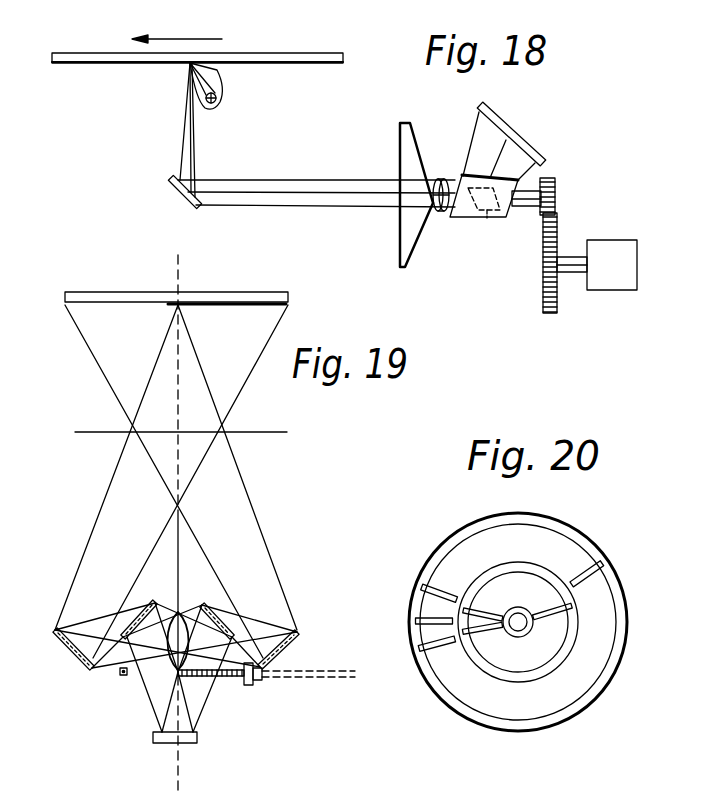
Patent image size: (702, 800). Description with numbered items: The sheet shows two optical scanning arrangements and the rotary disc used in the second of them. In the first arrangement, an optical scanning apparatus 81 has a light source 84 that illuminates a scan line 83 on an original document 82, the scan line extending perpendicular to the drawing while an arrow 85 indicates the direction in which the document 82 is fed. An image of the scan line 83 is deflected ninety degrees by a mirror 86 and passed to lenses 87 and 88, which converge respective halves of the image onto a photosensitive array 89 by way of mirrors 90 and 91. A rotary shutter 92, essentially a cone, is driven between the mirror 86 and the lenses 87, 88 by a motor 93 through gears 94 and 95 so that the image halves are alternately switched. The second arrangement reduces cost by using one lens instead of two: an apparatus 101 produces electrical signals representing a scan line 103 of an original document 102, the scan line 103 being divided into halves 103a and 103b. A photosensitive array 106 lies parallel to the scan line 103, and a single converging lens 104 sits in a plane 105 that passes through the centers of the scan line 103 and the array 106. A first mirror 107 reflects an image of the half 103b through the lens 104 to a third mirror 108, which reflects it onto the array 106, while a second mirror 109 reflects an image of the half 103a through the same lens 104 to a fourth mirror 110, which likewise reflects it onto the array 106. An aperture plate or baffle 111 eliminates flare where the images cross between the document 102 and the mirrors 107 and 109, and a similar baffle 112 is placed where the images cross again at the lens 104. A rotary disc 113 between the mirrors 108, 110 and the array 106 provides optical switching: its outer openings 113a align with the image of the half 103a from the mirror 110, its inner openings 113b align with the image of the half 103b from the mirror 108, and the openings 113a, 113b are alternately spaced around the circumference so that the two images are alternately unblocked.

In FIG. 18, the optical scanning apparatus 81 is at (252, 229).
In FIG. 18, the original document 82 is at (347, 60).
In FIG. 18, the scan line 83 is at (188, 66).
In FIG. 18, the light source 84 is at (222, 95).
In FIG. 18, the arrow 85 is at (177, 36).
In FIG. 18, the mirror 86 is at (170, 184).
In FIG. 18, the lens 87 is at (441, 178).
In FIG. 18, the lens 88 is at (441, 214).
In FIG. 18, the photosensitive array 89 is at (513, 122).
In FIG. 18, the mirror 90 is at (515, 218).
In FIG. 18, the mirror 91 is at (482, 219).
In FIG. 18, the rotary shutter 92 is at (399, 140).
In FIG. 18, the motor 93 is at (614, 291).
In FIG. 18, the gear 94 is at (550, 314).
In FIG. 18, the gear 95 is at (554, 178).
In FIG. 19, the optical scanning apparatus 101 is at (296, 486).
In FIG. 19, the original document 102 is at (266, 298).
In FIG. 19, the scan line 103 is at (118, 368).
In FIG. 19, the half of scan line 103a is at (121, 306).
In FIG. 19, the half of scan line 103b is at (220, 306).
In FIG. 19, the converging lens 104 is at (178, 626).
In FIG. 19, the plane 105 is at (178, 466).
In FIG. 19, the photosensitive array 106 is at (198, 738).
In FIG. 19, the first mirror 107 is at (72, 655).
In FIG. 19, the third mirror 108 is at (226, 616).
In FIG. 19, the second mirror 109 is at (295, 646).
In FIG. 19, the fourth mirror 110 is at (148, 600).
In FIG. 19, the aperture plate or baffle 111 is at (287, 432).
In FIG. 19, the aperture plate or baffle 112 is at (180, 560).
In FIG. 19, the rotary disc 113 is at (255, 683).
In FIG. 20, the rotary disc 113 is at (597, 665).
In FIG. 19, the outer openings 113a is at (157, 660).
In FIG. 20, the outer openings 113a is at (604, 565).
In FIG. 20, the inner openings 113b is at (482, 610).